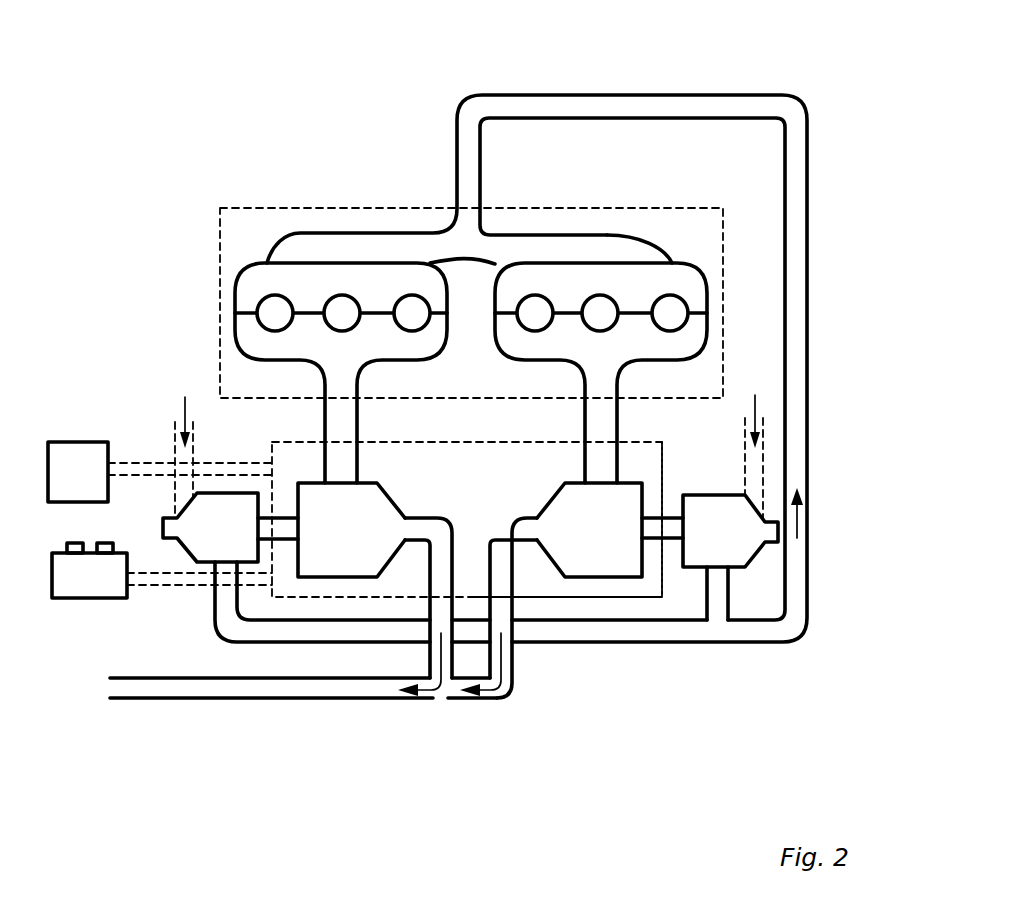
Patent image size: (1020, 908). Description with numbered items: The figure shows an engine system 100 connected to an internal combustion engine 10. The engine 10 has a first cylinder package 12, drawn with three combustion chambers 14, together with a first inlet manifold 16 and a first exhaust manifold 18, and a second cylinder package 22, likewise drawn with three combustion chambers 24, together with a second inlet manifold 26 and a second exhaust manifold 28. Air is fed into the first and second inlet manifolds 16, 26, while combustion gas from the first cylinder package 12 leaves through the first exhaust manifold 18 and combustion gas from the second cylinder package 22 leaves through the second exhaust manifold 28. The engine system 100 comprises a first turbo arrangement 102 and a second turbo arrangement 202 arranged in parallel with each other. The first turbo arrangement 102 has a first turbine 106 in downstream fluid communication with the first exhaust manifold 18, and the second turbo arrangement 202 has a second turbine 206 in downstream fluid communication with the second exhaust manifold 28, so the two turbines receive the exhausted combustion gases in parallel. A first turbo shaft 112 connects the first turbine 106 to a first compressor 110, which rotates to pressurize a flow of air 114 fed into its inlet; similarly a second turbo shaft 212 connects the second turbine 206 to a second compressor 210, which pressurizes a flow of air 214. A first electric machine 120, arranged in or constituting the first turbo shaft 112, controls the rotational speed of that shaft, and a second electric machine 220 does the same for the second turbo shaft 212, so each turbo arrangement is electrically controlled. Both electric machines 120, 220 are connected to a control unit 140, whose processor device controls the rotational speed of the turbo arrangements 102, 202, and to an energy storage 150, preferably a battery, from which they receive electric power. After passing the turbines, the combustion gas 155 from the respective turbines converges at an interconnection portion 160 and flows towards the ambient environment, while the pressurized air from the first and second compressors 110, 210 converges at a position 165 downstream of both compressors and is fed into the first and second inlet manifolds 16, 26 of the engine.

The internal combustion engine 10 is at (252, 208).
The first cylinder package 12 is at (220, 295).
The combustion chambers 14 is at (340, 318).
The first inlet manifold 16 is at (313, 280).
The first exhaust manifold 18 is at (258, 335).
The second cylinder package 22 is at (716, 268).
The combustion chambers 24 is at (672, 310).
The second inlet manifold 26 is at (627, 280).
The second exhaust manifold 28 is at (690, 346).
The engine system 100 is at (96, 400).
The first turbo arrangement 102 is at (295, 615).
The first turbine 106 is at (345, 577).
The first compressor 110 is at (185, 548).
The first turbo shaft 112 is at (285, 518).
The flow of air 114 is at (185, 407).
The first electric machine 120 is at (278, 527).
The control unit 140 is at (73, 442).
The energy storage 150 is at (78, 598).
The combustion gas 155 is at (438, 690).
The interconnection portion 160 is at (448, 690).
The position 165 is at (772, 636).
The second turbo arrangement 202 is at (652, 617).
The second turbine 206 is at (600, 577).
The second compressor 210 is at (757, 553).
The second turbo shaft 212 is at (670, 518).
The flow of air 214 is at (757, 410).
The second electric machine 220 is at (670, 540).